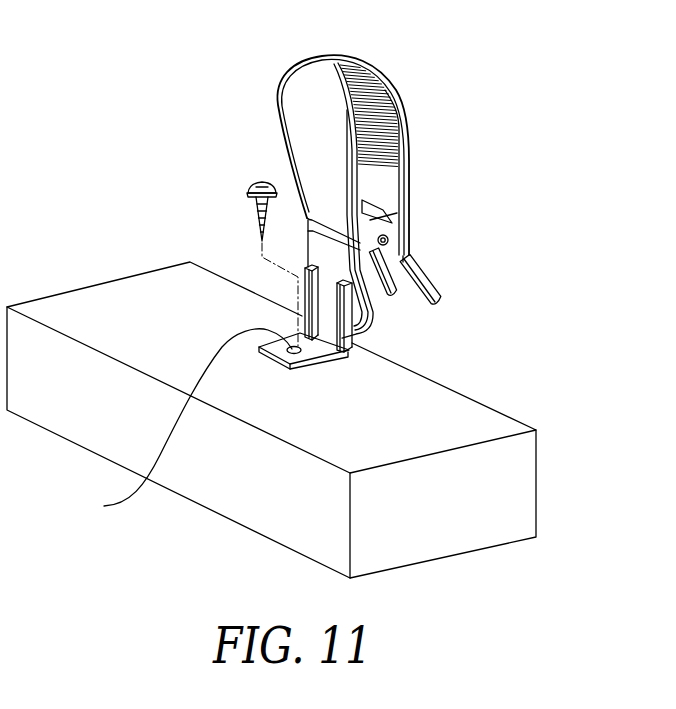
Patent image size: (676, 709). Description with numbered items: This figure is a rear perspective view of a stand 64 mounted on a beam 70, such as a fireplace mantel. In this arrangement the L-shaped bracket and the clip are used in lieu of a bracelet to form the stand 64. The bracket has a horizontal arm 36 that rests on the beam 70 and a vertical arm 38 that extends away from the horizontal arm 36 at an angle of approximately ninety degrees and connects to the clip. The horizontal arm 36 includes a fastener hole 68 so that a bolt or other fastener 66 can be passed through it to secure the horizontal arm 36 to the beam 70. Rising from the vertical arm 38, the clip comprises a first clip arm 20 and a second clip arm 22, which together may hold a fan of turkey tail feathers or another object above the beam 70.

The first clip arm 20 is at (300, 139).
The second clip arm 22 is at (383, 134).
The horizontal arm 36 is at (317, 353).
The vertical arm 38 is at (330, 310).
The stand 64 is at (460, 200).
The fastener 66 is at (250, 203).
The fastener hole 68 is at (184, 427).
The beam 70 is at (488, 422).